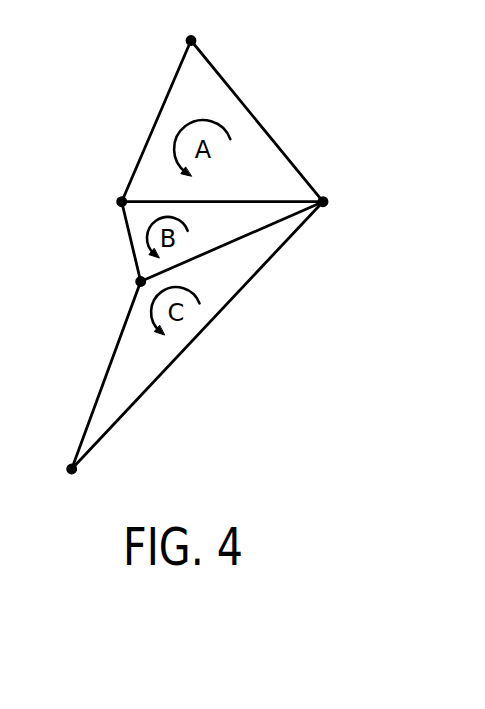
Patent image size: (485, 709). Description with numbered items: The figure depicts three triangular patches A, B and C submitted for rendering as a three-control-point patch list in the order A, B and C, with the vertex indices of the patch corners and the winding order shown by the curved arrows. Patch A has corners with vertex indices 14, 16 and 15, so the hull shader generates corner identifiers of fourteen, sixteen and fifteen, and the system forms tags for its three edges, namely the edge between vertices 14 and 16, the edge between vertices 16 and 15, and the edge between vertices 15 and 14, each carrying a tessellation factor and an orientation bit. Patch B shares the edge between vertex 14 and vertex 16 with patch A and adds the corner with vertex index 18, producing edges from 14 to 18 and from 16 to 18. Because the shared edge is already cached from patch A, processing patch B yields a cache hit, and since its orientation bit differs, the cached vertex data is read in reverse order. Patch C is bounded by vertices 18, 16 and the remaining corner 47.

The vertex index 15 is at (194, 25).
The vertex index 14 is at (106, 202).
The vertex index 16 is at (339, 202).
The vertex index 18 is at (126, 282).
The fifth node 47 is at (72, 486).